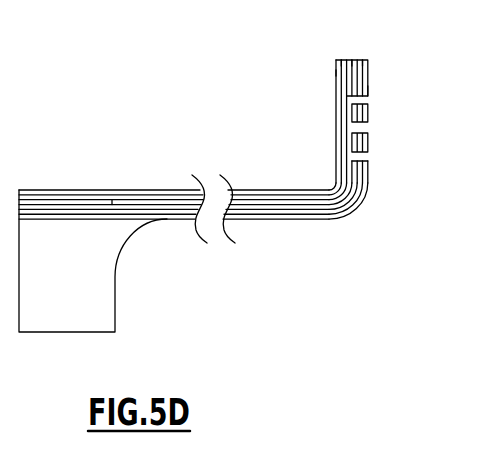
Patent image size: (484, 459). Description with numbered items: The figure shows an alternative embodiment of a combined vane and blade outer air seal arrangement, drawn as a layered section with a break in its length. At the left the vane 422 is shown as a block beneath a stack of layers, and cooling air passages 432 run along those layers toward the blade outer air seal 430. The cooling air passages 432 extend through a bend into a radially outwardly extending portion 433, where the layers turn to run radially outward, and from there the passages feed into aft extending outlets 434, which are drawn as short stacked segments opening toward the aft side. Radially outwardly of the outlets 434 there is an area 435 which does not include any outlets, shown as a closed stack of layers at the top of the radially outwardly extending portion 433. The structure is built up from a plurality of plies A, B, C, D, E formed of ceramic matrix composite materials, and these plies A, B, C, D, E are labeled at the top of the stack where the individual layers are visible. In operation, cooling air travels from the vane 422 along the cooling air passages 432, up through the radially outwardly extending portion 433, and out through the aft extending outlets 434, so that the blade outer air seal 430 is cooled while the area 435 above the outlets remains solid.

The vane 422 is at (98, 282).
The blade outer air seal 430 is at (278, 219).
The cooling air passages 432 is at (128, 204).
The radially outwardly extending portion 433 is at (347, 183).
The aft extending outlets 434 is at (362, 108).
The area 435 is at (348, 89).
The ply A is at (336, 73).
The ply B is at (343, 60).
The ply C is at (354, 60).
The ply D is at (364, 60).
The ply E is at (370, 86).